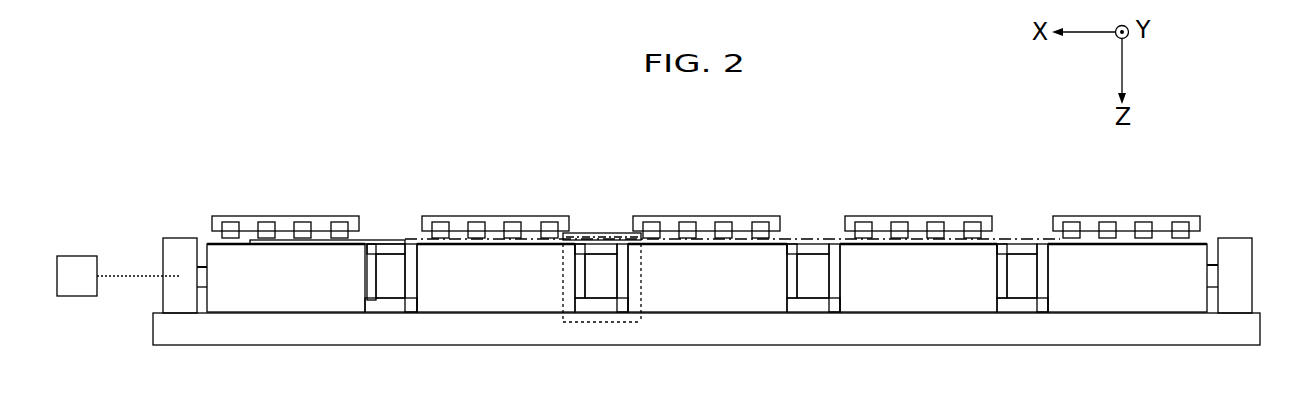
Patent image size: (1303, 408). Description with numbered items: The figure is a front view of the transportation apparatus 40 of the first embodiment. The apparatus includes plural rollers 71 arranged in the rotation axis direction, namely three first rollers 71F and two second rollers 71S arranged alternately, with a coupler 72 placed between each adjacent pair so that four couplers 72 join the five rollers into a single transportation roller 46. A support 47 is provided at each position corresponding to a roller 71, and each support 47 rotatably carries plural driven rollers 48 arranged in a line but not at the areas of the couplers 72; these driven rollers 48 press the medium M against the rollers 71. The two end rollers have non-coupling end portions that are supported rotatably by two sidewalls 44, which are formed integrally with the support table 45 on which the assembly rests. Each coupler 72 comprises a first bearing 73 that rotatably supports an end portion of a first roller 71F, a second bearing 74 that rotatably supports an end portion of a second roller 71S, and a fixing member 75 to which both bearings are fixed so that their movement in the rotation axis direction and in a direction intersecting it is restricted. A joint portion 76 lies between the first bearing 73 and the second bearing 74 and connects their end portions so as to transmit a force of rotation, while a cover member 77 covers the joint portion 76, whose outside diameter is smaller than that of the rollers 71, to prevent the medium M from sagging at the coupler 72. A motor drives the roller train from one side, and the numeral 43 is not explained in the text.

The transportation apparatus 40 is at (1252, 143).
The motor 43 is at (78, 255).
The sidewalls 44 is at (180, 237).
The support table 45 is at (153, 332).
The transportation roller 46 is at (1240, 279).
The supports 47 is at (318, 216).
The driven rollers 48 is at (267, 222).
The rollers 71 is at (687, 315).
The first roller 71F is at (219, 313).
The second roller 71S is at (495, 313).
The coupler 72 is at (649, 267).
The first bearing 73 is at (368, 313).
The second bearing 74 is at (412, 313).
The fixing member 75 is at (393, 313).
The joint portion 76 is at (400, 270).
The cover member 77 is at (368, 248).
The medium M is at (1013, 238).